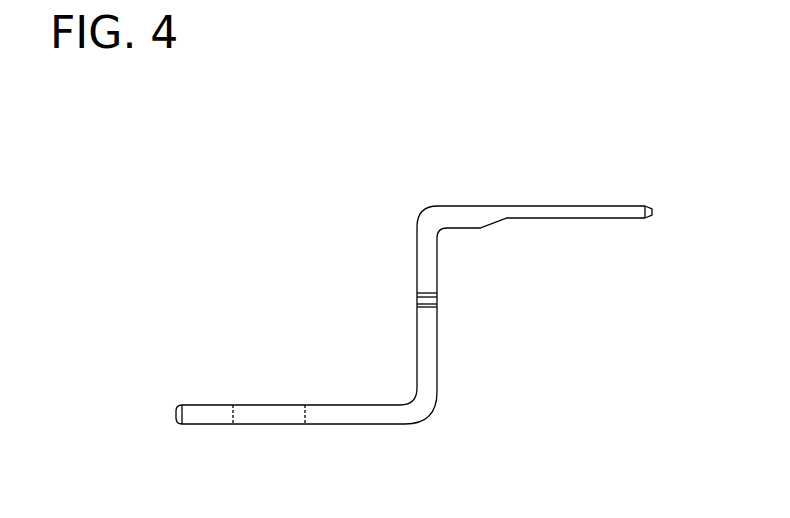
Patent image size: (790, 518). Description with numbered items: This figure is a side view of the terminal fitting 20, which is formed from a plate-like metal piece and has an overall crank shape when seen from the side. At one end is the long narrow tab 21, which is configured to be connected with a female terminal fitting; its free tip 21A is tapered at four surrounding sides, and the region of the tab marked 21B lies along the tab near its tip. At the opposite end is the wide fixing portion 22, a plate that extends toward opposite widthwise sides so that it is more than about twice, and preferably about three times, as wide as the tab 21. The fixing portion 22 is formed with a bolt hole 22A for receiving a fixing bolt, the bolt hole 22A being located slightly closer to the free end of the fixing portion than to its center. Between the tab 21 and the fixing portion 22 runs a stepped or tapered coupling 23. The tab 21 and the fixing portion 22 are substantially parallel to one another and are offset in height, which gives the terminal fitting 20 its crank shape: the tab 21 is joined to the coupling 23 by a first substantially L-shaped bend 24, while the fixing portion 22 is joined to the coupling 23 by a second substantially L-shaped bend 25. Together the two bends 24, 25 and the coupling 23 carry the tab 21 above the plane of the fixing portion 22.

The terminal fitting 20 is at (429, 340).
The tab 21 is at (560, 244).
The tip 21A is at (648, 218).
The upper surface of first arm 21B is at (575, 206).
The fixing portion 22 is at (323, 410).
The bolt hole 22A is at (236, 413).
The coupling 23 is at (447, 333).
The first substantially L-shaped bend 24 is at (427, 217).
The second substantially L-shaped bend 25 is at (413, 410).